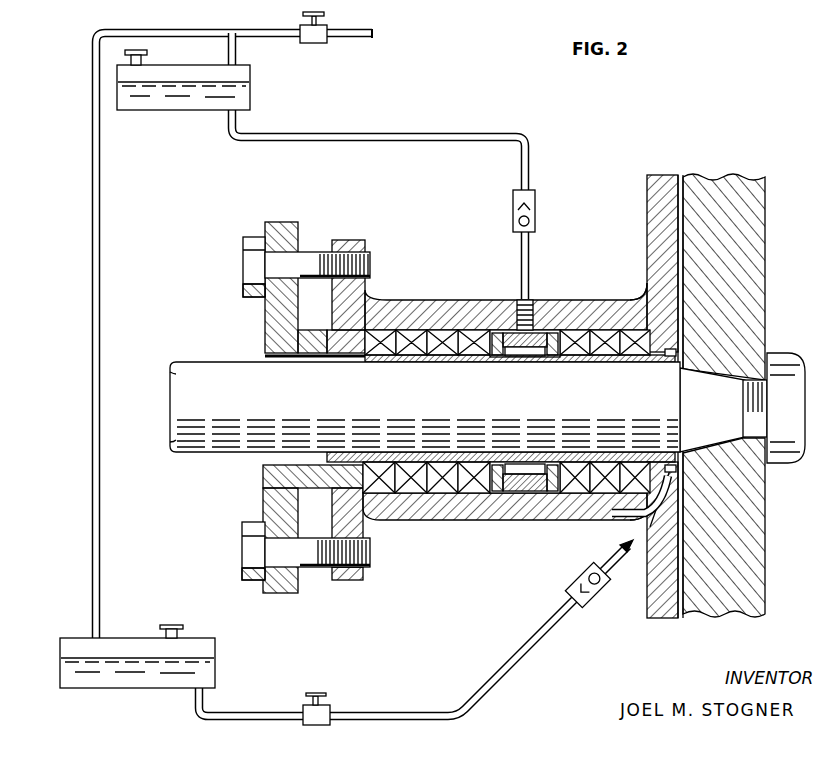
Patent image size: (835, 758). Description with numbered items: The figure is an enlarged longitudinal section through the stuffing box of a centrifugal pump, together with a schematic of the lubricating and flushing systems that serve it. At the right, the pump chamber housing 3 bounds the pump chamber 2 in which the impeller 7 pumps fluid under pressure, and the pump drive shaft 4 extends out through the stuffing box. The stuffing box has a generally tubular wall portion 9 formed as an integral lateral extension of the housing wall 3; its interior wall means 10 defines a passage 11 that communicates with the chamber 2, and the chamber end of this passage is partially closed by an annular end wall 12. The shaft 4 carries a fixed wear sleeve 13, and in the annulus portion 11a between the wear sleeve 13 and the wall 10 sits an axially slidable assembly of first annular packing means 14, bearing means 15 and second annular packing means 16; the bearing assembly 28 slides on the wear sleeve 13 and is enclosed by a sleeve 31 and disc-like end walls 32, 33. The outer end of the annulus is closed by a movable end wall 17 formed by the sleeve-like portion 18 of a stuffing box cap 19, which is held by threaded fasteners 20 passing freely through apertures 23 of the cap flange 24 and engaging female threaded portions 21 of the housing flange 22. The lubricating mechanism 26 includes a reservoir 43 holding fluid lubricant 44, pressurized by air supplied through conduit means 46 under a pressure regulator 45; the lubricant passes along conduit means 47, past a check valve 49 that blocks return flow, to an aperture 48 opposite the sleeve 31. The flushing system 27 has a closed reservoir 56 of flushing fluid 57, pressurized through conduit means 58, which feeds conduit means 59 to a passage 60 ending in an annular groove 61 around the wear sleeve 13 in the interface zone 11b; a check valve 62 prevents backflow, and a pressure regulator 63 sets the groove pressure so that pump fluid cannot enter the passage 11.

The pump chamber 2 is at (806, 308).
The pump chamber housing 3 is at (647, 202).
The pump drive shaft 4 is at (452, 408).
The impeller 7 is at (752, 235).
The tubular wall portion 9 is at (597, 306).
The interior wall means 10 is at (410, 330).
The passage 11 is at (422, 338).
The annulus portion 11a is at (444, 336).
The interface zone 11b is at (677, 352).
The annular end wall 12 is at (663, 337).
The wear sleeve 13 is at (601, 361).
The first annular packing means 14 is at (443, 483).
The bearing means 15 is at (527, 497).
The second annular packing means 16 is at (604, 467).
The movable end wall 17 is at (365, 354).
The sleeve-like portion 18 is at (310, 353).
The stuffing box cap 19 is at (298, 224).
The threaded fastener 20 is at (243, 550).
The female threaded portion 21 is at (345, 579).
The stuffing box housing flange 22 is at (345, 522).
The aperture 23 is at (275, 527).
The stuffing box cap flange 24 is at (276, 475).
The lubricating mechanism 26 is at (262, 118).
The flushing system 27 is at (222, 675).
The bearing assembly 28 is at (515, 358).
The sleeve 31 is at (522, 331).
The end wall 32 is at (549, 330).
The end wall 33 is at (495, 332).
The reservoir 43 is at (155, 110).
The fluid lubricant 44 is at (187, 95).
The pressure regulator 45 is at (319, 44).
The conduit means 46 is at (233, 49).
The conduit means 47 is at (428, 133).
The aperture 48 is at (523, 298).
The check valve 49 is at (537, 210).
The closed reservoir 56 is at (100, 690).
The flushing fluid 57 is at (137, 677).
The conduit means 58 is at (100, 307).
The conduit means 59 is at (422, 698).
The passage 60 is at (633, 522).
The annular groove 61 is at (665, 469).
The check valve 62 is at (607, 597).
The pressure regulator 63 is at (317, 718).